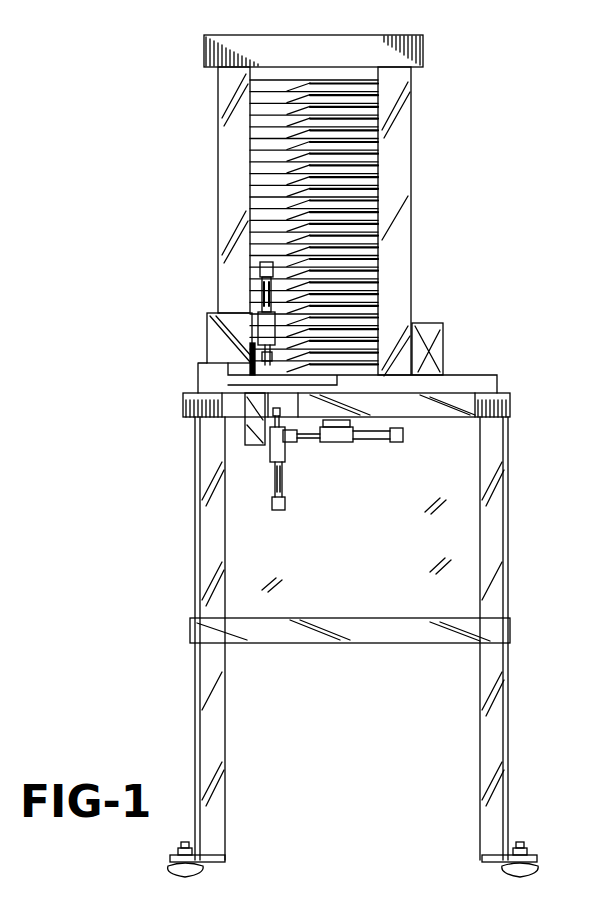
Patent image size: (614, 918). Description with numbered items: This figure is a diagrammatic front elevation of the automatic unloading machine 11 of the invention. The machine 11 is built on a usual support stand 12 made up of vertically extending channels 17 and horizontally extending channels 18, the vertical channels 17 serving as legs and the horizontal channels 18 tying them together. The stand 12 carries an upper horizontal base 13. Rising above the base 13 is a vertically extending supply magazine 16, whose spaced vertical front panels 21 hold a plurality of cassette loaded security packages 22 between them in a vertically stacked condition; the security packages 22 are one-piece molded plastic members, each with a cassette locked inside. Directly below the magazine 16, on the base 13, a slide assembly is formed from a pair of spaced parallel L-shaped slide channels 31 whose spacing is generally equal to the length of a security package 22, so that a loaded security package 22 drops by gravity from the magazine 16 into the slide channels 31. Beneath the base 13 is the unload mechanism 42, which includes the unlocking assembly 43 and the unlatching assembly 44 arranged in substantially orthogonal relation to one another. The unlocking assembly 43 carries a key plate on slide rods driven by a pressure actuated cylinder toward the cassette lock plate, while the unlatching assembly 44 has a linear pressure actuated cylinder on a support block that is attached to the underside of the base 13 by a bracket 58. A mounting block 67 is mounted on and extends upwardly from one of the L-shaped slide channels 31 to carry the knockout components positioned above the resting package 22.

The unloading machine 11 is at (522, 449).
The support stand 12 is at (382, 647).
The upper horizontal base 13 is at (480, 385).
The supply magazine 16 is at (412, 160).
The vertically extending channels 17 is at (497, 567).
The horizontally extending channels 18 is at (342, 643).
The front panels 21 is at (222, 203).
The security packages 22 is at (388, 114).
The L-shaped slide channels 31 is at (420, 365).
The unload mechanism 42 is at (342, 470).
The unlocking assembly 43 is at (266, 497).
The unlatching assembly 44 is at (364, 451).
The bracket 58 is at (336, 443).
The mounting block 67 is at (220, 343).